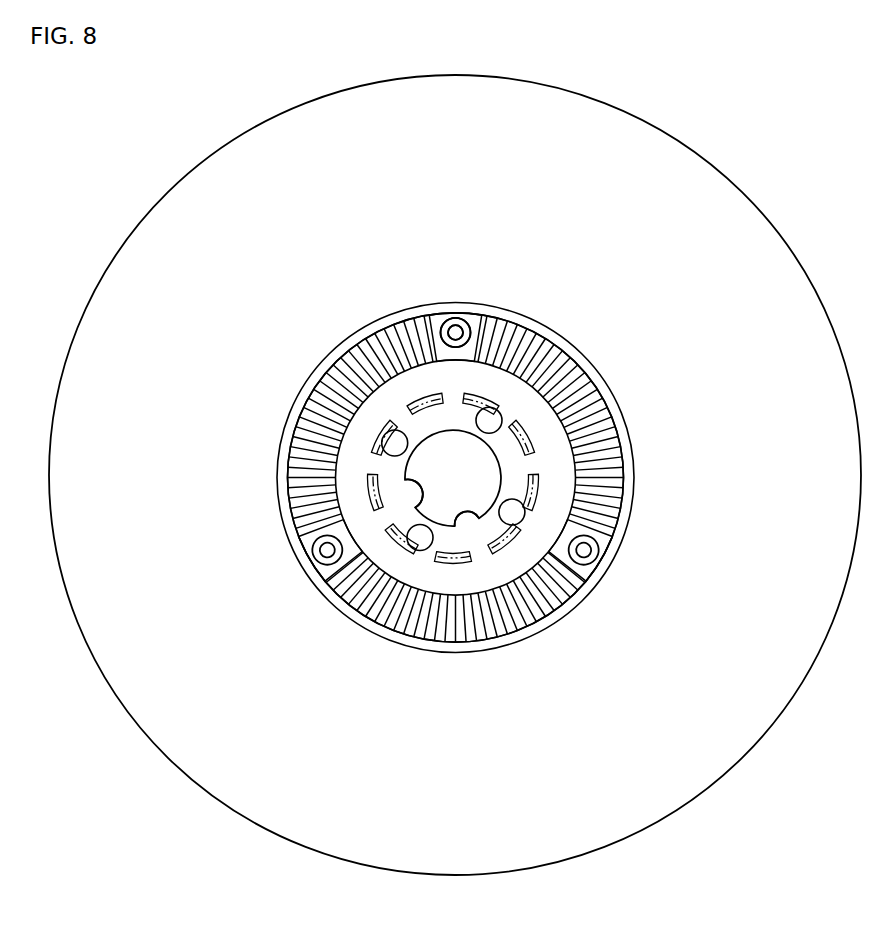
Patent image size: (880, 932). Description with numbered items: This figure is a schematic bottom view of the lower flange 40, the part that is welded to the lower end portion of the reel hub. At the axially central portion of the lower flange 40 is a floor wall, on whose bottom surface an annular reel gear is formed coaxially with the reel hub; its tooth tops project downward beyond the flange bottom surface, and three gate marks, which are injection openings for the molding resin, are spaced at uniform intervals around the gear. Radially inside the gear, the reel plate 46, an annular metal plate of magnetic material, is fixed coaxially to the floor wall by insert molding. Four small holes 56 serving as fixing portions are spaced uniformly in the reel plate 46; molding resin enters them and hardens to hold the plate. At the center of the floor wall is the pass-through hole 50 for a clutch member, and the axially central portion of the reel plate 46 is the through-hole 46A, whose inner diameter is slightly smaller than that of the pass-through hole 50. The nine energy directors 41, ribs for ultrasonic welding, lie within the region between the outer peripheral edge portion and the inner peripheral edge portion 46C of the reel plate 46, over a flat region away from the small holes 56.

The lower flange 40 is at (720, 212).
The energy director 41 is at (497, 553).
The reel plate 46 is at (476, 478).
The through-hole 46A is at (496, 566).
The inner peripheral edge portion 46C is at (422, 506).
The pass-through hole 50 is at (477, 517).
The small hole 56 is at (500, 415).